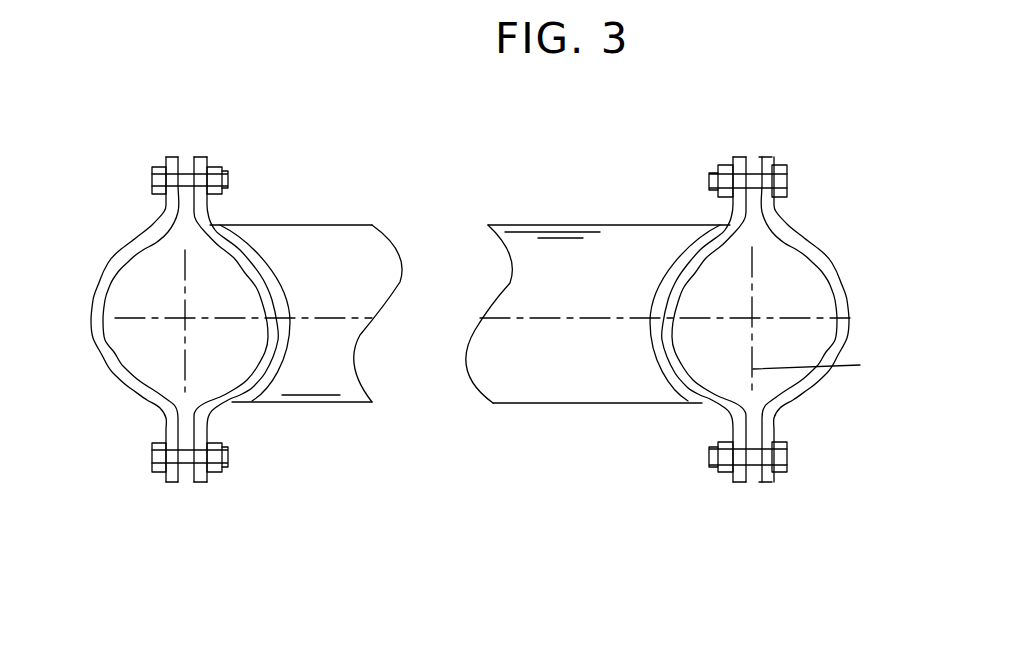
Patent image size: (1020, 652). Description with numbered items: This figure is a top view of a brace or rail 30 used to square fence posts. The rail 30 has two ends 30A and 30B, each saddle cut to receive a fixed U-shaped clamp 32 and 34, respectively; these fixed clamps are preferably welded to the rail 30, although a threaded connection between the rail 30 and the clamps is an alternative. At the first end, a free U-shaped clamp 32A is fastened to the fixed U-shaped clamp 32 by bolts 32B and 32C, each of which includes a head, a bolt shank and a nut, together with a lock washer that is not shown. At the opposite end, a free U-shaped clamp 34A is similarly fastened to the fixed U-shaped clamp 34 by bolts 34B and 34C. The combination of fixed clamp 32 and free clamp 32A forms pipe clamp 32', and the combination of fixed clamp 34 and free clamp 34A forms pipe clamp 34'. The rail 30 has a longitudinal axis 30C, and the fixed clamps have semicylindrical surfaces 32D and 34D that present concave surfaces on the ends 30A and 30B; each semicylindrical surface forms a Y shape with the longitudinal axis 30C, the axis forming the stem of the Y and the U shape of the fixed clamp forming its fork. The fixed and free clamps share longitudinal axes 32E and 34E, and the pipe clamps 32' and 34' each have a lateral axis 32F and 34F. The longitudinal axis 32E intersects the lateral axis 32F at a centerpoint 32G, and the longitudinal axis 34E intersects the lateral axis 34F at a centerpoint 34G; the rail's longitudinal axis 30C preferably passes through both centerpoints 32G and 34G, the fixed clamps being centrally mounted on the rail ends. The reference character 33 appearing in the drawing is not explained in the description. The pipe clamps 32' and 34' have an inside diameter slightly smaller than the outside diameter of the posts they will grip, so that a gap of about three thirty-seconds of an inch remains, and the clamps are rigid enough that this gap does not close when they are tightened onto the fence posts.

The brace or rail 30 is at (362, 225).
The end of rail 30A is at (230, 226).
The end of rail 30B is at (697, 406).
The longitudinal axis of rail 30C is at (368, 322).
The fixed U-shaped clamp 32 is at (341, 317).
The pipe clamp 32' is at (341, 317).
The free U-shaped clamp 32A is at (130, 400).
The bolt 32B is at (150, 175).
The bolt 32C is at (230, 457).
The semicylindrical surface 32D is at (268, 325).
The longitudinal axis 32E is at (176, 155).
The lateral axis 32F is at (266, 238).
The centerpoint 32G is at (183, 320).
The pipe centerline 33 is at (285, 266).
The fixed U-shaped clamp 34 is at (733, 321).
The pipe clamp 34' is at (733, 321).
The free U-shaped clamp 34A is at (805, 237).
The bolt 34B is at (788, 176).
The bolt 34C is at (790, 458).
The semicylindrical surface 34D is at (686, 256).
The longitudinal axis 34E is at (768, 318).
The lateral axis 34F is at (831, 353).
The centerpoint 34G is at (750, 320).